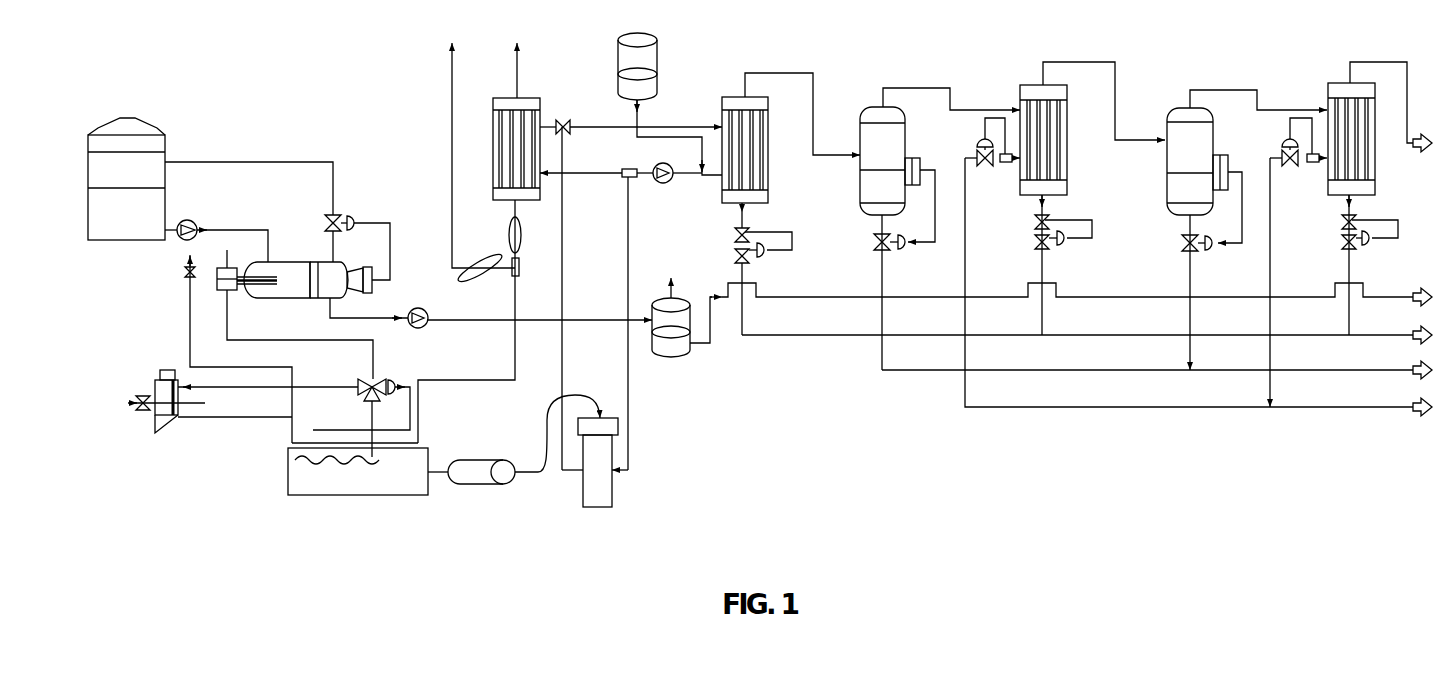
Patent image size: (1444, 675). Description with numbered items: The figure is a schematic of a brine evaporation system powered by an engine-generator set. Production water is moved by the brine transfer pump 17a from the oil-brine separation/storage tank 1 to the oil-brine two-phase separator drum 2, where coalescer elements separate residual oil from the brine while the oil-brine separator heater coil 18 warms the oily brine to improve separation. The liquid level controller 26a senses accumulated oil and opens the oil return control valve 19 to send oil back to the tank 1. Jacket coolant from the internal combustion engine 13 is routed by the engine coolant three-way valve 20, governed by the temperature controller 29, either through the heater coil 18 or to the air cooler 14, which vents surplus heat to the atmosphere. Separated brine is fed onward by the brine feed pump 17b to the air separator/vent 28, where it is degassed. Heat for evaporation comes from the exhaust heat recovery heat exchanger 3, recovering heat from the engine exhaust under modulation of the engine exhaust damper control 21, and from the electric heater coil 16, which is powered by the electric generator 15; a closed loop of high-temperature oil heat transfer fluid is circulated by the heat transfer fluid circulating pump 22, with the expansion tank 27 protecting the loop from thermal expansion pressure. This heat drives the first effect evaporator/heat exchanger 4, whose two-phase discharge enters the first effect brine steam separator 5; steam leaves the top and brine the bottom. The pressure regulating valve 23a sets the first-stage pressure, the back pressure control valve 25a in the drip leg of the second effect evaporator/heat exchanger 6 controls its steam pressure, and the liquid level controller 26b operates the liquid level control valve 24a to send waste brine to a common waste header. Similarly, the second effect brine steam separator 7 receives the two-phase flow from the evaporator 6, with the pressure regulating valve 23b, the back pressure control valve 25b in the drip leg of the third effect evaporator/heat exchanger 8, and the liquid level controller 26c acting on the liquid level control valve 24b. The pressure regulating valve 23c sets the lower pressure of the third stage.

The oil-brine separation/storage tank 1 is at (124, 118).
The oil-brine two-phase separator drum 2 is at (283, 262).
The exhaust heat recovery heat exchanger 3 is at (523, 97).
The first effect evaporator/heat exchanger 4 is at (732, 95).
The first effect brine steam separator 5 is at (872, 105).
The second effect evaporator/heat exchanger 6 is at (1032, 84).
The second effect brine steam separator 7 is at (1178, 106).
The third effect evaporator/heat exchanger 8 is at (1340, 82).
The internal combustion engine 13 is at (318, 497).
The air cooler 14 is at (165, 433).
The electric generator 15 is at (485, 487).
The electric heater coil 16 is at (617, 492).
The brine transfer pump 17a is at (192, 220).
The brine feed pump 17b is at (427, 327).
The oil-brine separator heater coil 18 is at (225, 293).
The oil return control valve 19 is at (352, 213).
The engine coolant three-way valve 20 is at (380, 380).
The engine exhaust damper control 21 is at (497, 262).
The heat transfer fluid circulating pump 22 is at (662, 185).
The pressure regulating valve 23a is at (767, 256).
The pressure regulating valve 23b is at (1067, 252).
The pressure regulating valve 23c is at (1372, 253).
The liquid level control valve 24a is at (898, 251).
The liquid level control valve 24b is at (1205, 252).
The back pressure control valve 25a is at (985, 132).
The back pressure control valve 25b is at (1290, 132).
The liquid level controller 26a is at (374, 276).
The liquid level controller 26b is at (915, 158).
The liquid level controller 26c is at (1225, 155).
The expansion tank 27 is at (660, 62).
The air separator/vent 28 is at (685, 358).
The temperature controller 29 is at (350, 428).